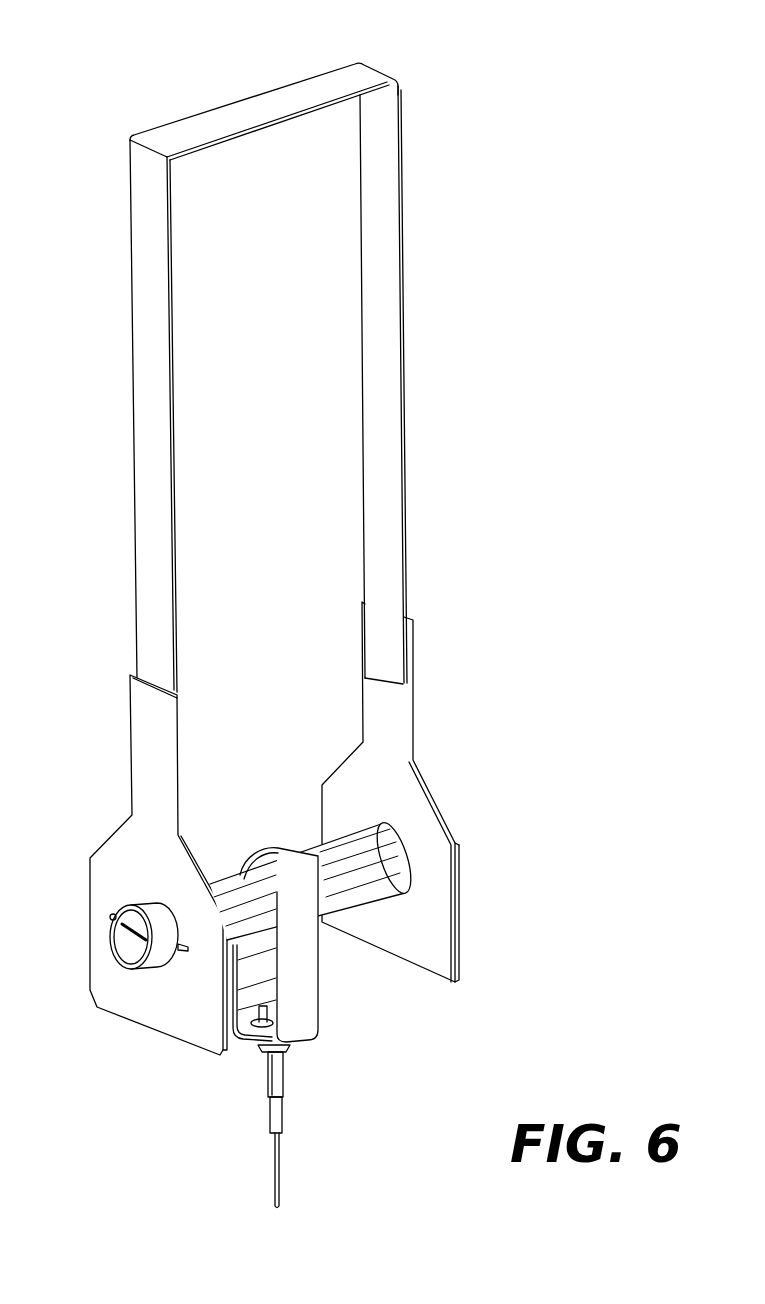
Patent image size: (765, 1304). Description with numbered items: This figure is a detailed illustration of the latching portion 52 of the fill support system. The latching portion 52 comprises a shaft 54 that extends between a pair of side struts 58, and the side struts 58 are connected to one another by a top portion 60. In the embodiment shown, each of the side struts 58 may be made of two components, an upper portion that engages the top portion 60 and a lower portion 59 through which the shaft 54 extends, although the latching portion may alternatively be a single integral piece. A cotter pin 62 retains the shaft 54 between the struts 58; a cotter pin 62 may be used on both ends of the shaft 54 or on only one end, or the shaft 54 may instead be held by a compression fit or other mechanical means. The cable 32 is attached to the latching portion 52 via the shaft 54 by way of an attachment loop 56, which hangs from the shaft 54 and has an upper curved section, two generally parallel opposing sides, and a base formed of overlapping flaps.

The latching portion 52 is at (468, 124).
The top portion 60 is at (238, 112).
The side struts 58 is at (137, 522).
The lower portion 59 is at (130, 790).
The cotter pin 62 is at (177, 958).
The shaft 54 is at (315, 842).
The attachment loop 56 is at (319, 994).
The cable 32 is at (283, 1155).